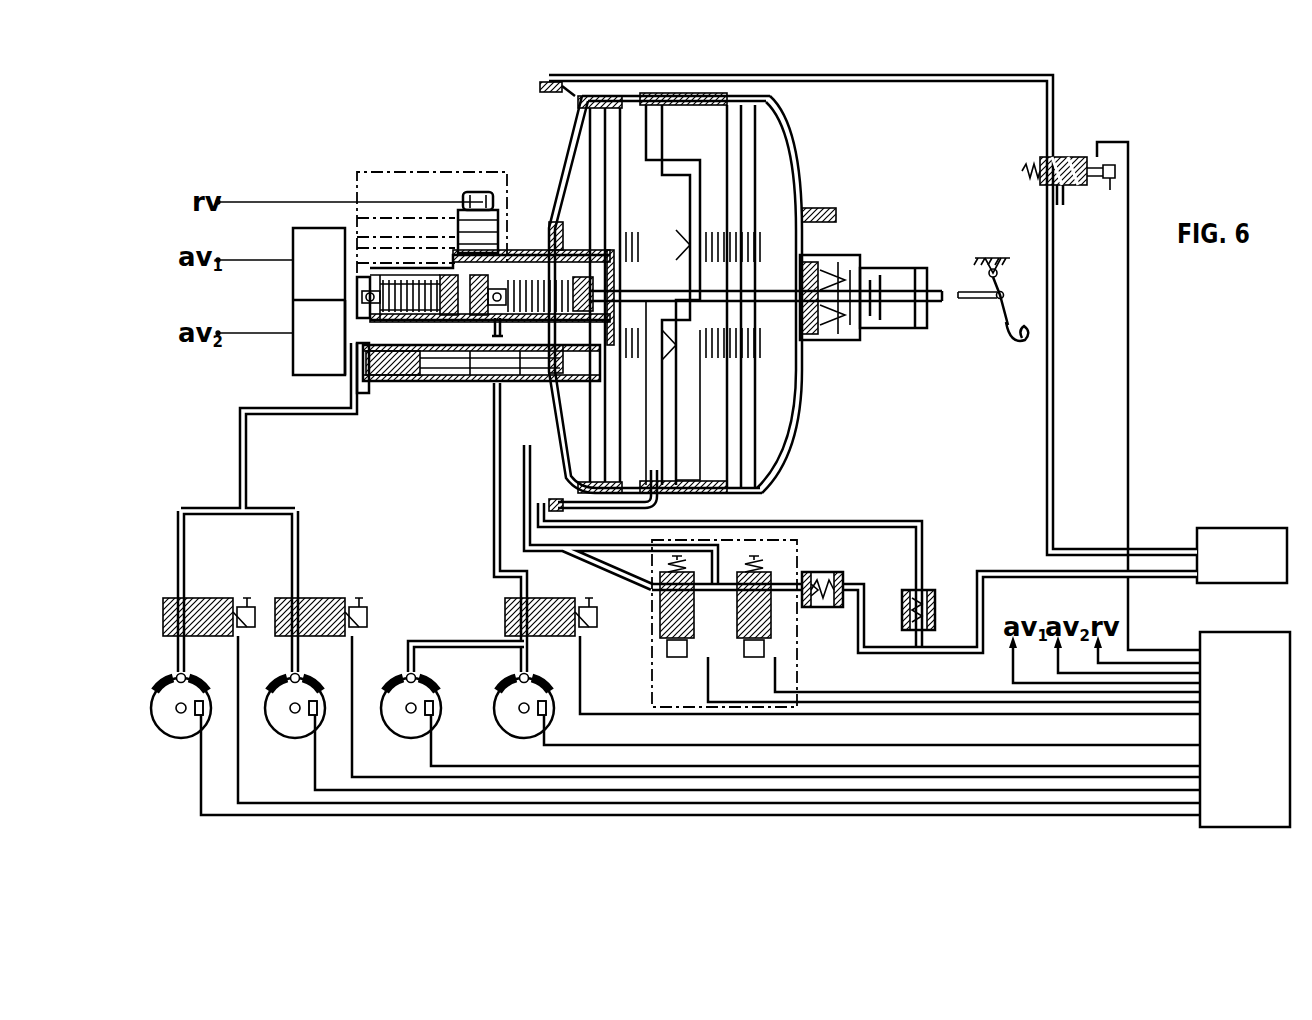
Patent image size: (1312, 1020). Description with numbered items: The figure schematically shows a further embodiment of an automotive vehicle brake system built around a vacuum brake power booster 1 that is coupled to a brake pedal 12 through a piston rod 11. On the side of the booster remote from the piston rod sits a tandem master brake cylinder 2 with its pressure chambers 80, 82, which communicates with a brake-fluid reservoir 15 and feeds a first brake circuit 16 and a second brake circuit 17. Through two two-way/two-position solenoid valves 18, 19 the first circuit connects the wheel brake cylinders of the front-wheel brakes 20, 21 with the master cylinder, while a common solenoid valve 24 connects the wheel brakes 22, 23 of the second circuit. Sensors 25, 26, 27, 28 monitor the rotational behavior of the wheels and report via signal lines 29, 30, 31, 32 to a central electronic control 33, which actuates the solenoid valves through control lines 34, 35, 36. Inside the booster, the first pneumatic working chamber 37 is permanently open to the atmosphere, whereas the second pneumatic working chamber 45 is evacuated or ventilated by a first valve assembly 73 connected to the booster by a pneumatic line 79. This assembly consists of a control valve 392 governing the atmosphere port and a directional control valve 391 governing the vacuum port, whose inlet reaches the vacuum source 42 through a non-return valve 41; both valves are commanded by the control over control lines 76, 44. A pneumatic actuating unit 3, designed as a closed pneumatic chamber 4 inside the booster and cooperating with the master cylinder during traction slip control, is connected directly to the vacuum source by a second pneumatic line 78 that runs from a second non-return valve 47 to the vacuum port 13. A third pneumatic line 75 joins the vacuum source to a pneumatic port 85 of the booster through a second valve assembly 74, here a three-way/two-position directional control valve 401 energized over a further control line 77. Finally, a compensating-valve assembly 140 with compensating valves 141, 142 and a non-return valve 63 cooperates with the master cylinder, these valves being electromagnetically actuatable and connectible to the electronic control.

The vacuum brake power booster 1 is at (736, 268).
The tandem master brake cylinder 2 is at (485, 343).
The pneumatic actuating unit 3 is at (697, 173).
The closed pneumatic chamber 4 is at (668, 224).
The piston rod 11 is at (943, 303).
The brake pedal 12 is at (1010, 318).
The vacuum port 13 is at (655, 510).
The brake-fluid reservoir 15 is at (380, 237).
The first brake circuit 16 is at (278, 408).
The second brake circuit 17 is at (493, 420).
The solenoid valve 18 is at (225, 598).
The solenoid valve 19 is at (330, 598).
The wheel brake 20 is at (188, 678).
The wheel brake 21 is at (300, 678).
The wheel brake 22 is at (418, 678).
The wheel brake 23 is at (531, 678).
The common solenoid valve 24 is at (550, 592).
The sensor 25 is at (204, 704).
The sensor 26 is at (318, 704).
The sensor 27 is at (434, 706).
The sensor 28 is at (547, 706).
The signal line 29 is at (203, 784).
The signal line 30 is at (316, 757).
The signal line 31 is at (432, 750).
The signal line 32 is at (548, 740).
The central electronic control 33 is at (1257, 727).
The control line 34 is at (240, 762).
The control line 35 is at (353, 762).
The control line 36 is at (582, 702).
The first pneumatic working chamber 37 is at (599, 117).
The non-return valve 41 is at (845, 580).
The vacuum source 42 is at (1255, 574).
The control line 44 is at (782, 672).
The second pneumatic working chamber 45 is at (563, 157).
The non-return valve 47 is at (935, 600).
The non-return valve 63 is at (493, 192).
The first valve assembly 73 is at (730, 619).
The second valve assembly 74 is at (1075, 157).
The third pneumatic line 75 is at (947, 83).
The control line 76 is at (712, 675).
The control line 77 is at (1130, 345).
The second pneumatic line 78 is at (790, 524).
The pneumatic line 79 is at (523, 458).
The master brake cylinder pressure chamber 80 is at (512, 318).
The master brake cylinder pressure chamber 82 is at (410, 318).
The pneumatic port 85 is at (570, 94).
The compensating-valve assembly 140 is at (254, 301).
The compensating valve 141 is at (332, 276).
The compensating valve 142 is at (290, 290).
The two-way/two-position directional control valve 391 is at (737, 598).
The two-way/two-position control valve 392 is at (640, 597).
The three-way/two-position directional control valve 401 is at (1067, 190).